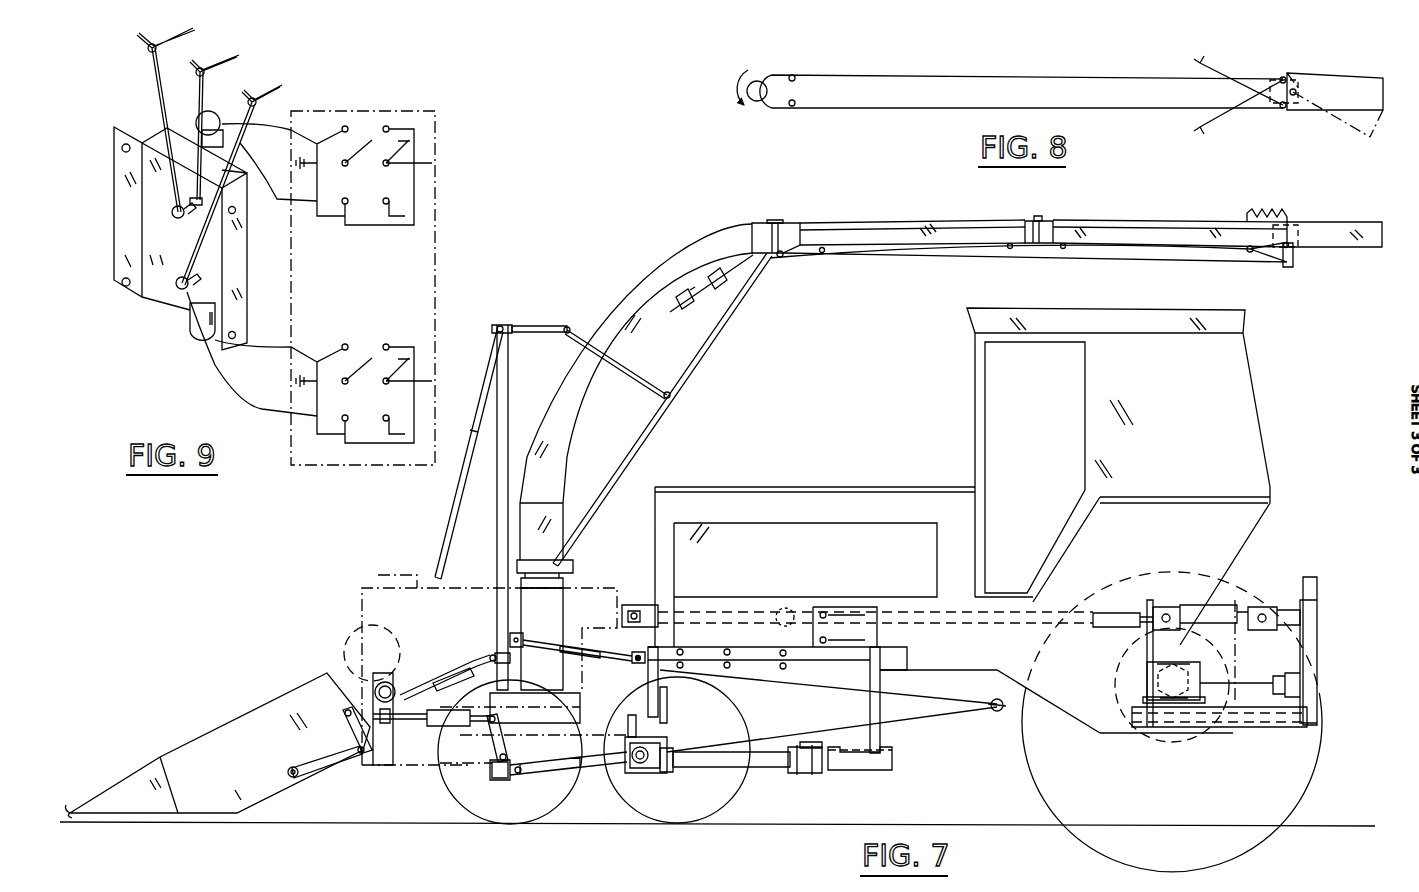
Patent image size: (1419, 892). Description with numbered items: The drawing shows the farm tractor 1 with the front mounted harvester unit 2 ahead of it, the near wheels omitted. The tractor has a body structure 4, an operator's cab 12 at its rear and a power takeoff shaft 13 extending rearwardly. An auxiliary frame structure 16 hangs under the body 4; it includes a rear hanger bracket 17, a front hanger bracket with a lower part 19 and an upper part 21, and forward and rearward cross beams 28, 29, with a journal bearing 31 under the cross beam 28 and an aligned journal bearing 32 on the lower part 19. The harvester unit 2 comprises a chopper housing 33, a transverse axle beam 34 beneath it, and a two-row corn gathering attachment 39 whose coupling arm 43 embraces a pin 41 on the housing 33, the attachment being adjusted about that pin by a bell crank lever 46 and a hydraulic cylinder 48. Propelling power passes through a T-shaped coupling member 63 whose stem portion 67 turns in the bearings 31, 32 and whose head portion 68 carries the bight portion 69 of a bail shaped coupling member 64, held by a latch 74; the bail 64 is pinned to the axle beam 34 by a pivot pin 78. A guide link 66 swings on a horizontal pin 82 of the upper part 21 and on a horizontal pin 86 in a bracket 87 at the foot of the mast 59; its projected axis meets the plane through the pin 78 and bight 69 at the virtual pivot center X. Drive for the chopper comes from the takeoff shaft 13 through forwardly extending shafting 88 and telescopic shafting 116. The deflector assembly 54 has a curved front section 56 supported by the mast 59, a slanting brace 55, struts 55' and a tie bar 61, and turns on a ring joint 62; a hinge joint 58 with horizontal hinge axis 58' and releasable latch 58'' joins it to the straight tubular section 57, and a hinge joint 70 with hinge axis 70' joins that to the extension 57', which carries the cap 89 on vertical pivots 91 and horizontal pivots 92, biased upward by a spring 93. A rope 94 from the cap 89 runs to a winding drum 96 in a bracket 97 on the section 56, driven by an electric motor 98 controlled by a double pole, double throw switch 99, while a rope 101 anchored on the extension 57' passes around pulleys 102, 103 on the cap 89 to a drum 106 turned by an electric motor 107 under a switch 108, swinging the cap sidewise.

In FIG. 7, the farm tractor 1 is at (868, 483).
In FIG. 7, the front mounted harvester unit 2 is at (412, 578).
In FIG. 7, the body structure 4 is at (953, 670).
In FIG. 7, the operator's cab 12 is at (1258, 460).
In FIG. 7, the power takeoff shaft 13 is at (1252, 680).
In FIG. 7, the auxiliary frame structure 16 is at (904, 772).
In FIG. 7, the left rear hanger bracket 17 is at (880, 730).
In FIG. 7, the lower part of front hanger bracket 19 is at (667, 706).
In FIG. 7, the upper part of front hanger bracket 21 is at (648, 673).
In FIG. 7, the forward cross beam 28 is at (815, 742).
In FIG. 7, the rearward cross beam 29 is at (893, 745).
In FIG. 7, the journal bearing 31 is at (803, 774).
In FIG. 7, the journal bearing 32 is at (684, 775).
In FIG. 7, the chopper housing 33 is at (362, 604).
In FIG. 7, the transverse axle beam 34 is at (492, 781).
In FIG. 7, the two row corn gathering attachment 39 is at (240, 714).
In FIG. 7, the pin 41 is at (392, 674).
In FIG. 7, the coupling arm 43 is at (365, 685).
In FIG. 7, the bell crank lever 46 is at (313, 768).
In FIG. 7, the hydraulic cylinder 48 is at (440, 722).
In FIG. 7, the deflector assembly 54 is at (893, 214).
In FIG. 7, the slanting brace 55 is at (662, 409).
In FIG. 7, the struts 55' is at (608, 327).
In FIG. 7, the curved front section 56 is at (610, 305).
In FIG. 7, the straight tubular section 57 is at (912, 214).
In FIG. 7, the straight tubular extension 57' is at (1170, 215).
In FIG. 7, the hinge joint 58 is at (787, 216).
In FIG. 7, the horizontal hinge axis 58' is at (809, 266).
In FIG. 7, the releasable latch 58'' is at (764, 201).
In FIG. 7, the mast 59 is at (510, 358).
In FIG. 7, the tie bar 61 is at (536, 326).
In FIG. 7, the ring joint 62 is at (575, 573).
In FIG. 7, the T-shaped coupling member 63 is at (762, 777).
In FIG. 7, the bail shaped coupling member 64 is at (583, 780).
In FIG. 7, the guide link 66 is at (590, 655).
In FIG. 7, the stem portion 67 is at (722, 768).
In FIG. 7, the transverse head portion 68 is at (645, 775).
In FIG. 7, the bight portion 69 is at (625, 753).
In FIG. 7, the hinge joint 70 is at (1053, 212).
In FIG. 7, the horizontal hinge axis 70' is at (1021, 201).
In FIG. 7, the latch 74 is at (628, 727).
In FIG. 7, the pivot pin 78 is at (518, 776).
In FIG. 7, the horizontal pin 82 is at (634, 650).
In FIG. 7, the horizontal pin 86 is at (510, 640).
In FIG. 7, the bracket 87 is at (516, 634).
In FIG. 7, the forwardly extending shafting 88 is at (1115, 612).
In FIG. 7, the cap 89 is at (1372, 270).
In FIG. 8, the cap 89 is at (1350, 78).
In FIG. 8, the vertical pivots 91 is at (1295, 89).
In FIG. 7, the horizontal pivots 92 is at (1298, 253).
In FIG. 7, the spring 93 is at (1270, 212).
In FIG. 7, the rope 94 is at (1158, 255).
In FIG. 9, the rope 94 is at (243, 58).
In FIG. 9, the winding drum 96 is at (172, 213).
In FIG. 7, the bracket 97 is at (690, 300).
In FIG. 9, the bracket 97 is at (124, 178).
In FIG. 7, the electric motor 98 is at (730, 279).
In FIG. 9, the electric motor 98 is at (213, 112).
In FIG. 9, the double pole, double throw switch 99 is at (433, 130).
In FIG. 8, the rope 101 is at (985, 77).
In FIG. 9, the rope 101 is at (198, 30).
In FIG. 8, the pulley 102 is at (1282, 108).
In FIG. 8, the pulley 103 is at (1281, 78).
In FIG. 8, the drum 106 is at (758, 101).
In FIG. 9, the drum 106 is at (178, 290).
In FIG. 7, the electric motor 107 is at (685, 302).
In FIG. 9, the electric motor 107 is at (196, 330).
In FIG. 9, the double pole, double throw switch 108 is at (422, 347).
In FIG. 7, the telescopic shafting 116 is at (645, 606).
In FIG. 7, the virtual pivot center X is at (997, 712).